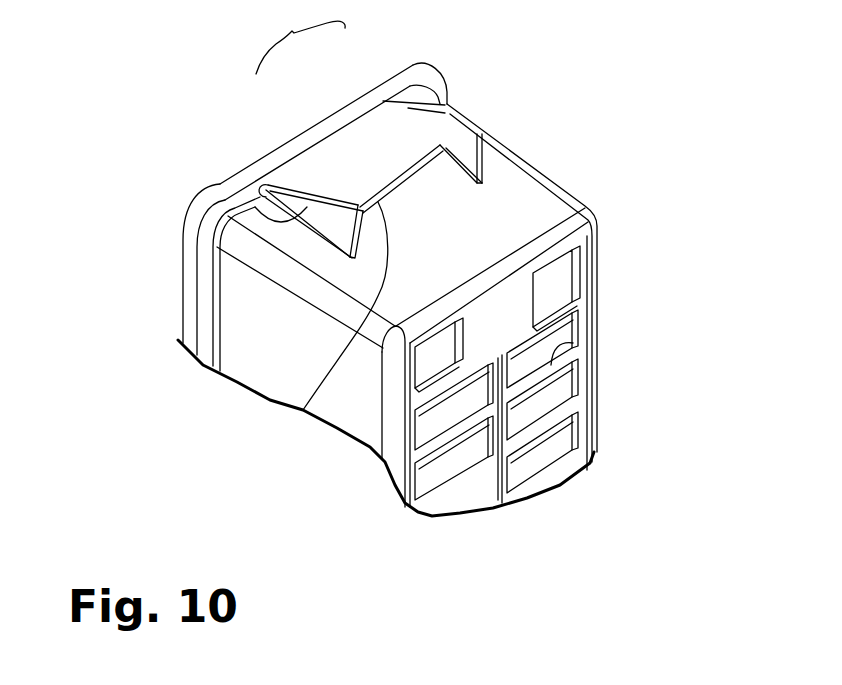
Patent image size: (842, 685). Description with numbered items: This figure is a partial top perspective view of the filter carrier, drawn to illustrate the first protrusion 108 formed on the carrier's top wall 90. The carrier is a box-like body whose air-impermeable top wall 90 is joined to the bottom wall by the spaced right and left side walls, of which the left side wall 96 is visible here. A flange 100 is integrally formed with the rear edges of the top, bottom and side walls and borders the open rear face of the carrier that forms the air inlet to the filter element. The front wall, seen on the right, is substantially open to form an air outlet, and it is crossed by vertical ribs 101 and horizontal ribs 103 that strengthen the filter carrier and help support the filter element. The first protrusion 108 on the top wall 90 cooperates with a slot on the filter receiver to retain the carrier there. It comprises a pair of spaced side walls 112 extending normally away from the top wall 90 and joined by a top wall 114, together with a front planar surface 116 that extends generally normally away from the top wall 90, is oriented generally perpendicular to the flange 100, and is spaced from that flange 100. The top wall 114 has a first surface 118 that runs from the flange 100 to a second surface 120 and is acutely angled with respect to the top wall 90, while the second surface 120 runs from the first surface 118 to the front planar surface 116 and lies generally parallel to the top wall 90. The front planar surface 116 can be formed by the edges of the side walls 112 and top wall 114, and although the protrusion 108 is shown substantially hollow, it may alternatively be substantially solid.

The top wall 90 is at (535, 205).
The left side wall 96 is at (275, 352).
The flange 100 is at (190, 295).
The vertical ribs 101 is at (498, 420).
The horizontal ribs 103 is at (573, 327).
The first protrusion 108 is at (445, 102).
The side walls 112 is at (242, 202).
The top wall 114 is at (297, 38).
The front planar surface 116 is at (307, 408).
The first surface 118 is at (330, 143).
The second surface 120 is at (407, 172).